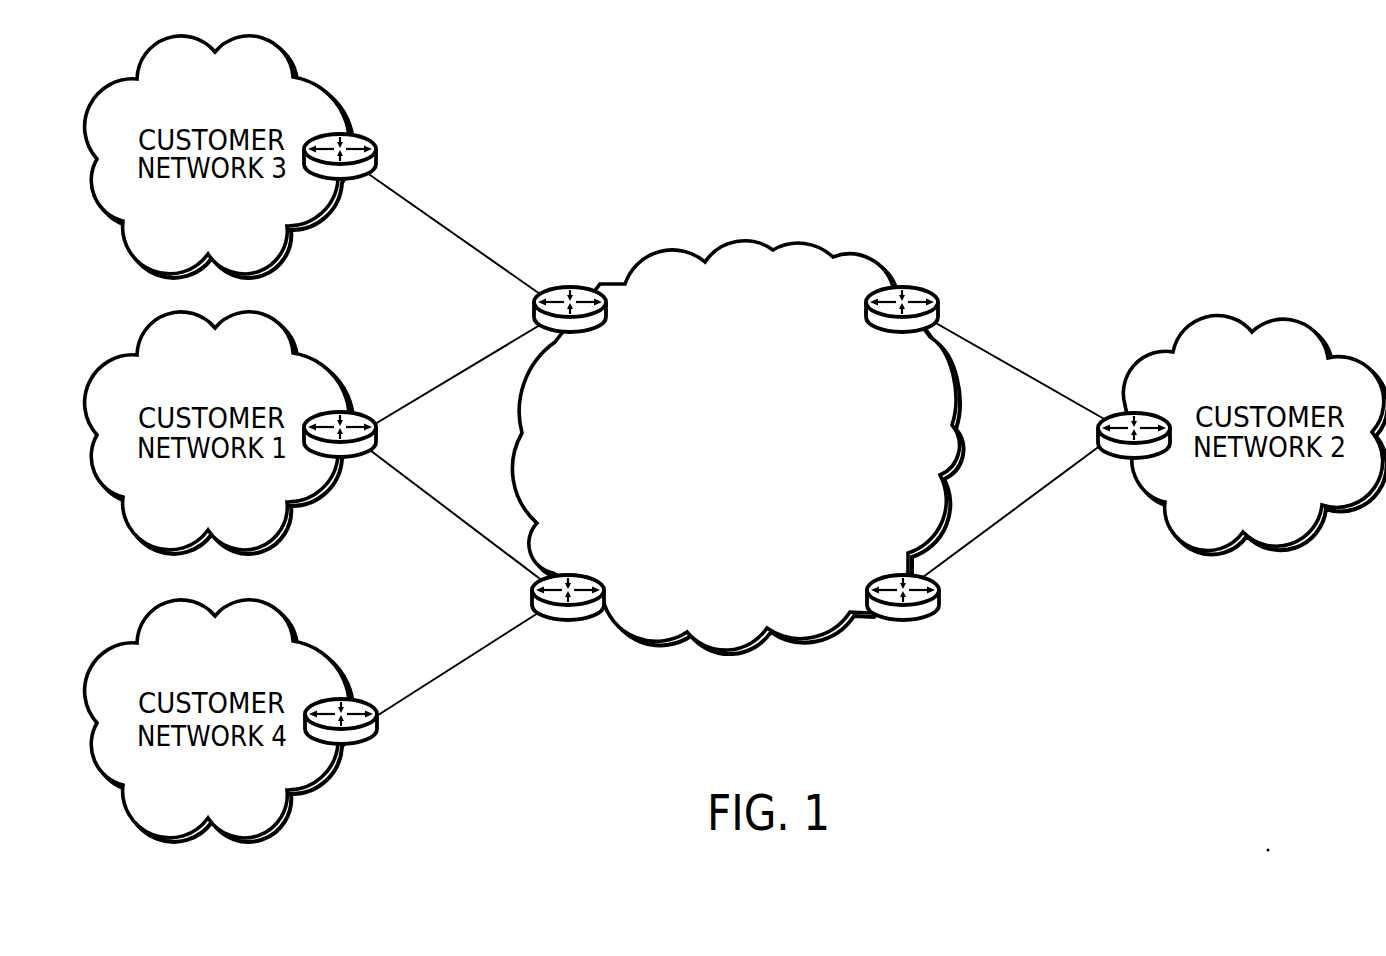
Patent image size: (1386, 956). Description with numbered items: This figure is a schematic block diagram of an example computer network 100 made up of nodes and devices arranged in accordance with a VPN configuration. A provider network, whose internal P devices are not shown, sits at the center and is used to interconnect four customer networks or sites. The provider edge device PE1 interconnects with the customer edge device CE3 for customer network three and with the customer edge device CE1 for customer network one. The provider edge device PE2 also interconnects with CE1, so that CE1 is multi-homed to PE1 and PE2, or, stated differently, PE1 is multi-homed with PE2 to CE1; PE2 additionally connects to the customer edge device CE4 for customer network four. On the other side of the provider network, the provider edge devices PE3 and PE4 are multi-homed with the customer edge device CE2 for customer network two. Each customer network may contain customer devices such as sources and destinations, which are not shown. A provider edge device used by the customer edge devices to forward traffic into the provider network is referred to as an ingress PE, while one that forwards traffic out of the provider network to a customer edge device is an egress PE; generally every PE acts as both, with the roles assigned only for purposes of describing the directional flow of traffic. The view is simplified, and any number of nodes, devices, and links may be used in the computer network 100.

The computer network 100 is at (1097, 142).
The customer edge router CE1 is at (366, 414).
The customer edge router CE2 is at (1119, 460).
The customer edge router CE3 is at (373, 137).
The customer edge router CE4 is at (360, 742).
The provider edge router PE1 is at (563, 288).
The provider edge router PE2 is at (571, 622).
The provider edge router PE3 is at (922, 287).
The provider edge router PE4 is at (914, 622).